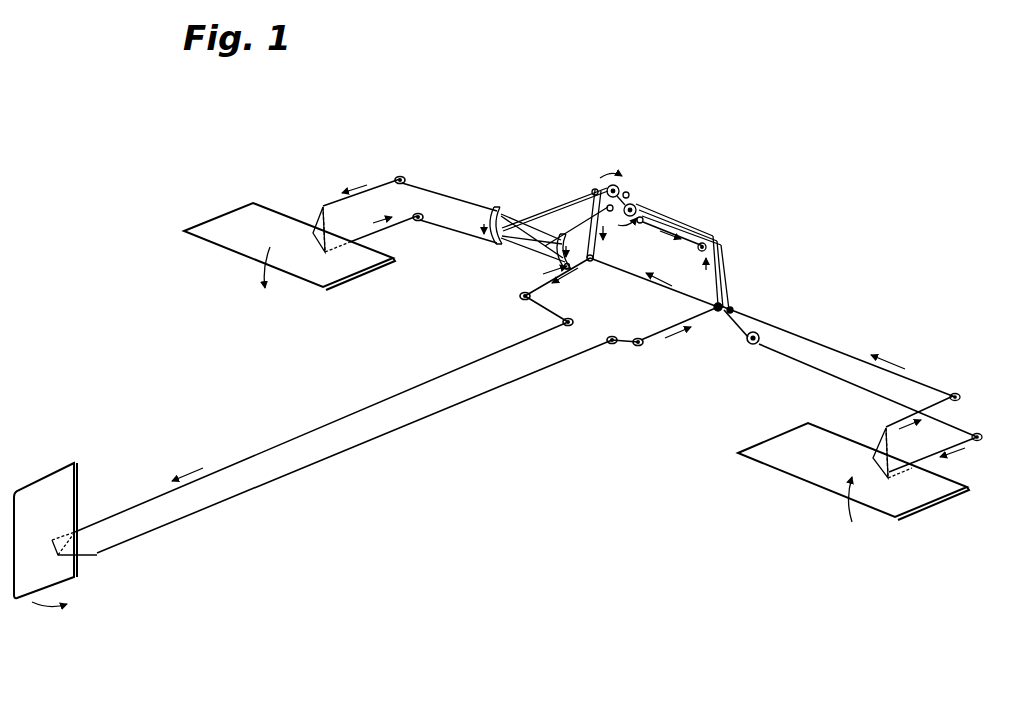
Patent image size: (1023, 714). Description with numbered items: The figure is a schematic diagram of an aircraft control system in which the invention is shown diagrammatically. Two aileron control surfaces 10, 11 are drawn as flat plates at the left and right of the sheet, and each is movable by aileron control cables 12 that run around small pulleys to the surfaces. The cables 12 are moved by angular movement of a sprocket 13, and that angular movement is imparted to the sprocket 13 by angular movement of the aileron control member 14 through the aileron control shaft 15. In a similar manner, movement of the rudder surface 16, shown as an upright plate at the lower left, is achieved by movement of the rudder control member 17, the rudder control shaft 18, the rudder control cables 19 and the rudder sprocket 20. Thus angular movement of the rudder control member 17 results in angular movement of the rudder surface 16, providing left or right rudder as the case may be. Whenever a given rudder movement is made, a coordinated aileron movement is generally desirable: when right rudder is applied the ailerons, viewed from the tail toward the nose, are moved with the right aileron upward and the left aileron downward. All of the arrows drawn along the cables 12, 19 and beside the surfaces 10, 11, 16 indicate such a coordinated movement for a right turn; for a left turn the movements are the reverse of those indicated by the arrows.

The aileron control surface 10 is at (305, 258).
The aileron control surface 11 is at (824, 462).
The aileron control cables 12 is at (805, 332).
The sprocket 13 is at (620, 186).
The aileron control member 14 is at (488, 246).
The aileron control shaft 15 is at (573, 203).
The rudder surface 16 is at (55, 518).
The rudder control member 17 is at (556, 268).
The rudder control shaft 18 is at (612, 214).
The rudder control cables 19 is at (458, 403).
The rudder sprocket 20 is at (637, 205).